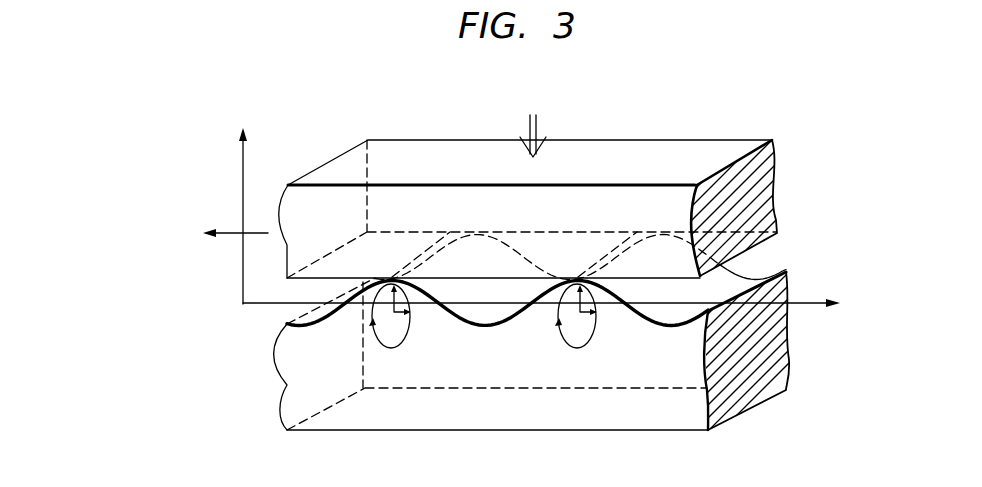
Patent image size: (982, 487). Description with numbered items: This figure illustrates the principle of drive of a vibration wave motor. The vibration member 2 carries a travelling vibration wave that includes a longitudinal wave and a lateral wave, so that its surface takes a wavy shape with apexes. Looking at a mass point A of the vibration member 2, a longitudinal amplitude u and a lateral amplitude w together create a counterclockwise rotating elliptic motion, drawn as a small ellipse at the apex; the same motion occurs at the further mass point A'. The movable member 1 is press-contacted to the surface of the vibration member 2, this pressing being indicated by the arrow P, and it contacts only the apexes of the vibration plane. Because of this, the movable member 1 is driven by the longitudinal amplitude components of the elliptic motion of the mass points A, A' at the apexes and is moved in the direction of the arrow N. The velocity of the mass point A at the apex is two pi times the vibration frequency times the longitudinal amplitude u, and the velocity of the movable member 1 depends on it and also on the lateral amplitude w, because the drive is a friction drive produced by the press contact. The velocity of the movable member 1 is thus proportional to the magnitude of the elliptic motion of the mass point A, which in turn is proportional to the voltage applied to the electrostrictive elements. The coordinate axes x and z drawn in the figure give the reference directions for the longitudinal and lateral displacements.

The movable member 1 is at (710, 143).
The vibration member 2 is at (785, 333).
The mass point A is at (387, 258).
The mass point A' is at (574, 258).
The lateral amplitude w is at (371, 323).
The longitudinal amplitude u is at (404, 314).
The press-contact arrow P is at (533, 123).
The movement direction arrow N is at (223, 234).
The x coordinate axis x is at (549, 302).
The z coordinate axis z is at (242, 206).